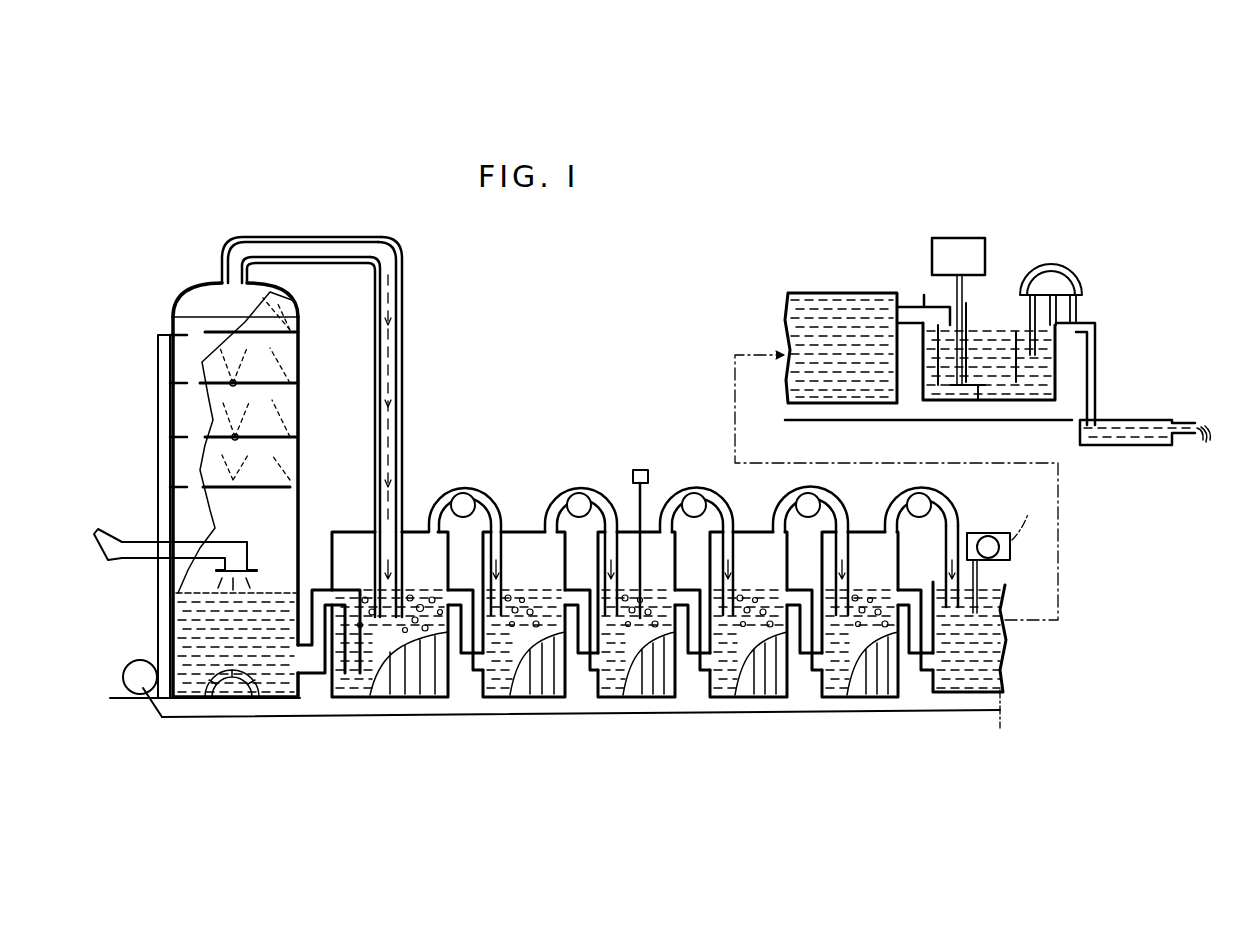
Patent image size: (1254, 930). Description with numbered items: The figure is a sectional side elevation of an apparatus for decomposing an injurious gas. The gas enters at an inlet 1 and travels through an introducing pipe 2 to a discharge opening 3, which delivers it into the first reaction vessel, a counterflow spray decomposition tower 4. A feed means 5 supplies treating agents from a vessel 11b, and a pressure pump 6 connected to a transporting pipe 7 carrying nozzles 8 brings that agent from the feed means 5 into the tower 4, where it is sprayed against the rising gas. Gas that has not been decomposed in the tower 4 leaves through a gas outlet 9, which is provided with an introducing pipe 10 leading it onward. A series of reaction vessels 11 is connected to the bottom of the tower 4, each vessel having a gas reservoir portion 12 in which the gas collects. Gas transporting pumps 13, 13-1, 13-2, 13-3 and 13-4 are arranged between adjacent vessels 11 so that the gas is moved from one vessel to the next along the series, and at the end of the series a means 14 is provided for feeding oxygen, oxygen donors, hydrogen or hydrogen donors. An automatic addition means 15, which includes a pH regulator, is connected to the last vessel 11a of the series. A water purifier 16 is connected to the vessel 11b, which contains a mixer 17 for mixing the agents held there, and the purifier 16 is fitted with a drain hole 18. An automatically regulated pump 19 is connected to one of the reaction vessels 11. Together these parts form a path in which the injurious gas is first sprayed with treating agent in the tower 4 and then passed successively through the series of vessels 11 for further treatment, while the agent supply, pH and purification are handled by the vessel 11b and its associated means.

The inlet 1 is at (101, 531).
The introducing pipe 2 is at (130, 560).
The discharge opening 3 is at (245, 556).
The counterflow spray decomposition tower 4 is at (298, 520).
The feed means 5 is at (1076, 272).
The pressure pump 6 is at (142, 660).
The transporting pipe 7 is at (157, 402).
The nozzles 8 is at (235, 381).
The gas outlet 9 is at (222, 263).
The introducing pipe 10 is at (400, 322).
The reaction vessels 11 is at (420, 682).
The last vessel 11a is at (960, 680).
The vessel 11b is at (1077, 358).
The gas reservoir portion 12 is at (410, 547).
The gas transporting pump 13 is at (476, 494).
The gas transporting pump 13-1 is at (548, 486).
The gas transporting pump 13-2 is at (679, 488).
The gas transporting pump 13-3 is at (786, 488).
The gas transporting pump 13-4 is at (911, 488).
The means for feeding oxygen, oxygen donors, hydrogen or hydrogen donors 14 is at (985, 237).
The automatic addition means 15 is at (988, 533).
The water purifier 16 is at (1092, 440).
The mixer 17 is at (972, 388).
The drain hole 18 is at (1184, 425).
The automatically regulated pump 19 is at (644, 470).